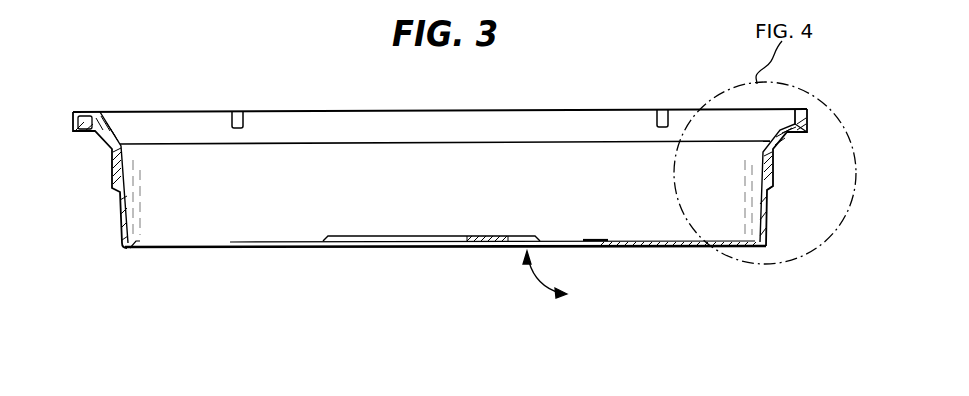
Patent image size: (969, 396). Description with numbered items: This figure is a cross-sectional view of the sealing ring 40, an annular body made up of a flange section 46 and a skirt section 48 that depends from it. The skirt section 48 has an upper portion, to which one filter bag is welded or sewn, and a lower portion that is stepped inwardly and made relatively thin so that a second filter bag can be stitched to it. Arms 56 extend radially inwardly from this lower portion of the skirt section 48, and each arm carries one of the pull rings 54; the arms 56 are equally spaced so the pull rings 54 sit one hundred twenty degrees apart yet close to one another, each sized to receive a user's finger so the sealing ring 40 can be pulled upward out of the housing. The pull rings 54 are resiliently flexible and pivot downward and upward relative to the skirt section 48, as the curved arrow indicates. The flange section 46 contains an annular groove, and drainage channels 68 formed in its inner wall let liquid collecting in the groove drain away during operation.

The sealing ring 40 is at (138, 95).
The flange section 46 is at (808, 115).
The skirt section 48 is at (778, 180).
The pull rings 54 is at (366, 234).
The arms 56 is at (651, 248).
The drainage channels 68 is at (243, 119).